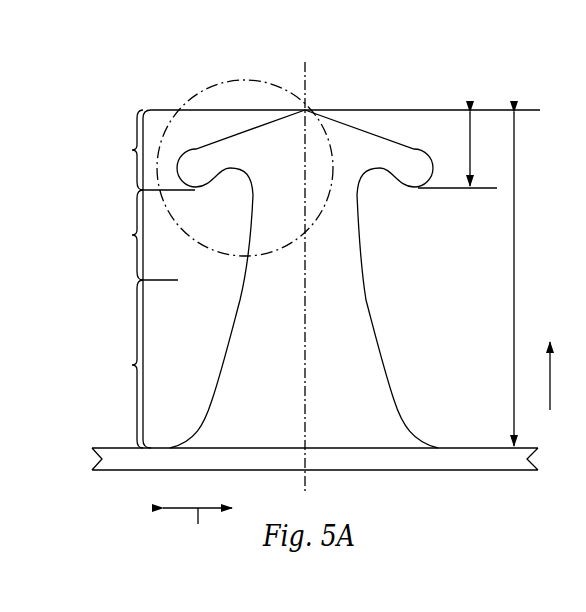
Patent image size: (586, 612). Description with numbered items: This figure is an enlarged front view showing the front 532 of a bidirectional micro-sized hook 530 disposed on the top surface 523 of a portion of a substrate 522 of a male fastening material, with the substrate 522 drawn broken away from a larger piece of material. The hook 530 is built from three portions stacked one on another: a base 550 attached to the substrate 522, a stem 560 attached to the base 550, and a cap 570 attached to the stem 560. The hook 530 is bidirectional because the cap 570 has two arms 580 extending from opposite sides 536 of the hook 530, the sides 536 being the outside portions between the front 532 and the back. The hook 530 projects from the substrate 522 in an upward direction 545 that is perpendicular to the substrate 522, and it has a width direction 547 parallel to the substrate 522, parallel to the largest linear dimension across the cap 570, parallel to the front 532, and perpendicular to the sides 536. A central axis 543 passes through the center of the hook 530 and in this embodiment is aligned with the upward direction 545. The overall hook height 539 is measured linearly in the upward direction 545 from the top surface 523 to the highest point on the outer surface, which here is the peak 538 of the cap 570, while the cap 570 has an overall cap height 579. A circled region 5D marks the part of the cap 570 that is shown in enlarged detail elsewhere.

The substrate 522 is at (281, 460).
The top surface 523 is at (100, 444).
The bidirectional micro-sized hook 530 is at (158, 83).
The front 532 is at (346, 270).
The sides 536 is at (250, 213).
The peak 538 is at (310, 108).
The overall hook height 539 is at (514, 279).
The central axis 543 is at (309, 264).
The upward direction 545 is at (552, 393).
The width direction 547 is at (197, 531).
The base 550 is at (115, 364).
The stem 560 is at (133, 235).
The cap 570 is at (142, 150).
The overall cap height 579 is at (457, 150).
The arms 580 is at (225, 138).
The detail view circle 5D is at (230, 80).